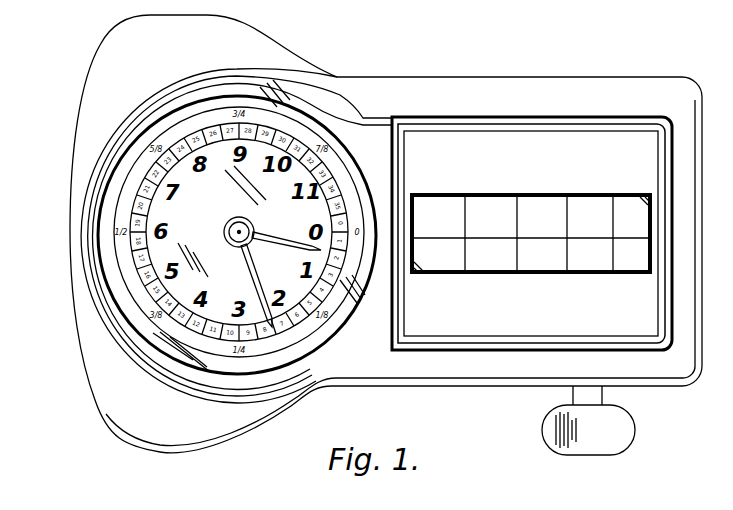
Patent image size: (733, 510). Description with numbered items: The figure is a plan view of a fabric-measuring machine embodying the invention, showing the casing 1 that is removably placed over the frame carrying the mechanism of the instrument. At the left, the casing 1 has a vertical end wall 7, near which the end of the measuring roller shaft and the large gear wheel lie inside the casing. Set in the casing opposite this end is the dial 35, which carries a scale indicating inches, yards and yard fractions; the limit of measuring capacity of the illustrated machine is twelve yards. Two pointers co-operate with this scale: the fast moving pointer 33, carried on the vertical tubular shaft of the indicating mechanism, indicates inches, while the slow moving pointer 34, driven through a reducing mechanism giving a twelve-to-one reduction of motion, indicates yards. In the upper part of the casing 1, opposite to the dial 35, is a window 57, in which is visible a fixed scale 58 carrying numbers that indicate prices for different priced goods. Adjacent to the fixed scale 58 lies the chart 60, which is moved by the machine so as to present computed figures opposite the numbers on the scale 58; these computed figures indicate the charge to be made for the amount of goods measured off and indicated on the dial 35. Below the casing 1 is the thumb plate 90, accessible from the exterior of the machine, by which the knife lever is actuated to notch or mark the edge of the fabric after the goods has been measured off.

The casing 1 is at (410, 88).
The vertical end wall 7 is at (70, 308).
The fast moving pointer 33 is at (257, 279).
The slow moving pointer 34 is at (270, 244).
The dial 35 is at (308, 127).
The window 57 is at (580, 207).
The fixed scale 58 is at (500, 210).
The chart 60 is at (538, 264).
The thumb plate 90 is at (588, 420).